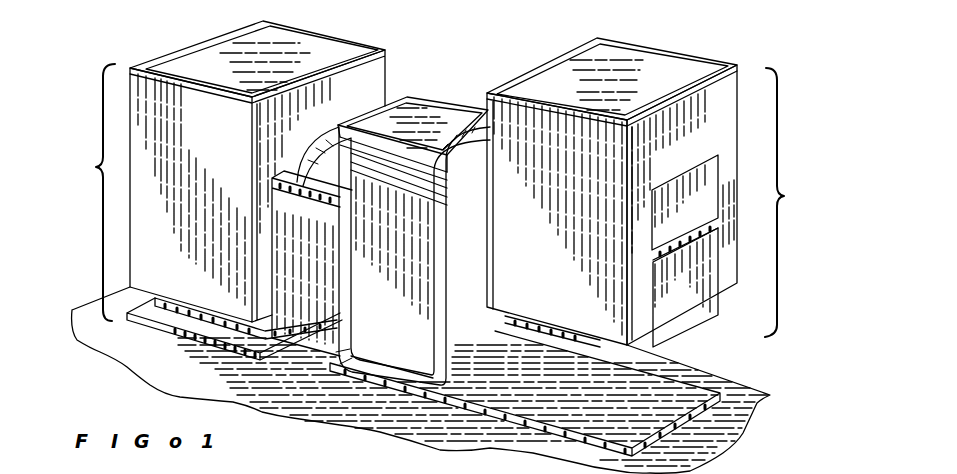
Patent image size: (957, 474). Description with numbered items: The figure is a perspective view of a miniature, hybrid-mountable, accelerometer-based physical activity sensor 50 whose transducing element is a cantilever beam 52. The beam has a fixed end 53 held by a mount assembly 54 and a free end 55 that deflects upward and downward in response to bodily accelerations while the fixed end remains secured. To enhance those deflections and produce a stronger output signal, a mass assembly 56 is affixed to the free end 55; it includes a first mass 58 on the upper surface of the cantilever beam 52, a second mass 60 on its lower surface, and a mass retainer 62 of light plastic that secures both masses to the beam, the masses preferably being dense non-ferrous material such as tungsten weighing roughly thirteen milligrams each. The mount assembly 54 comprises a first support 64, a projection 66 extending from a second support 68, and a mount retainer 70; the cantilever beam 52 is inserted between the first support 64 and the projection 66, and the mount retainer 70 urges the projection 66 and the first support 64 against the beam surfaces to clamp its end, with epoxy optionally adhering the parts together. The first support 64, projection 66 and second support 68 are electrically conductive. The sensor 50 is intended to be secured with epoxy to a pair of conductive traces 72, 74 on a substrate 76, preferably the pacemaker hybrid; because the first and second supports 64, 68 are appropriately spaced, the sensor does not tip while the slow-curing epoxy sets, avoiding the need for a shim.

The sensor 50 is at (190, 36).
The cantilever beam 52 is at (471, 243).
The fixed end 53 is at (80, 146).
The mount assembly 54 is at (222, 165).
The free end 55 is at (812, 232).
The mass assembly 56 is at (652, 189).
The first mass 58 is at (707, 193).
The second mass 60 is at (707, 268).
The mass retainer 62 is at (688, 74).
The first support 64 is at (167, 307).
The projection 66 is at (298, 178).
The second support 68 is at (422, 122).
The mount retainer 70 is at (334, 52).
The conductive trace 72 is at (200, 338).
The conductive trace 74 is at (667, 398).
The substrate 76 is at (690, 447).